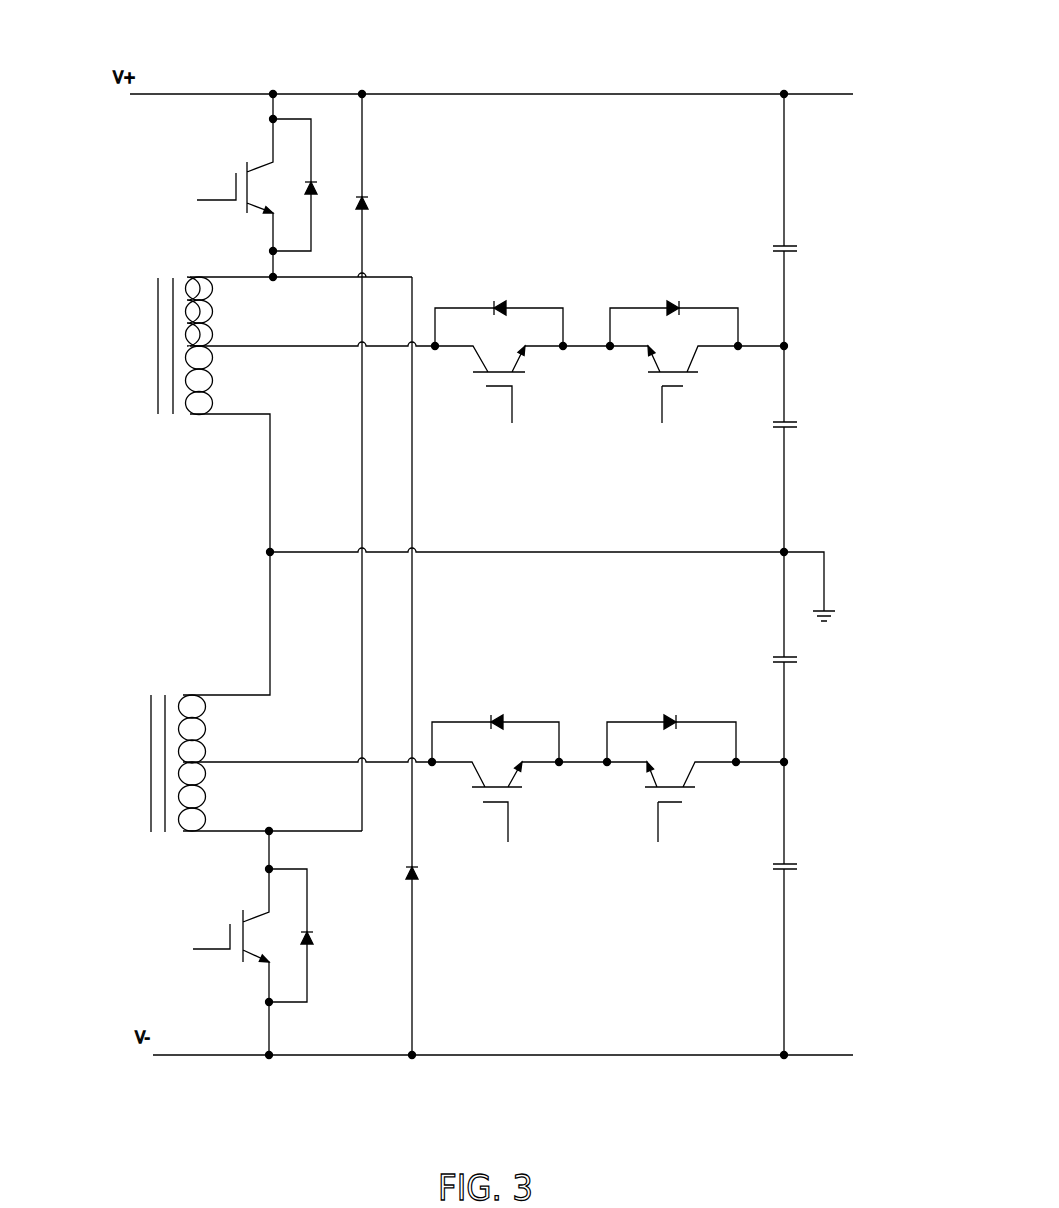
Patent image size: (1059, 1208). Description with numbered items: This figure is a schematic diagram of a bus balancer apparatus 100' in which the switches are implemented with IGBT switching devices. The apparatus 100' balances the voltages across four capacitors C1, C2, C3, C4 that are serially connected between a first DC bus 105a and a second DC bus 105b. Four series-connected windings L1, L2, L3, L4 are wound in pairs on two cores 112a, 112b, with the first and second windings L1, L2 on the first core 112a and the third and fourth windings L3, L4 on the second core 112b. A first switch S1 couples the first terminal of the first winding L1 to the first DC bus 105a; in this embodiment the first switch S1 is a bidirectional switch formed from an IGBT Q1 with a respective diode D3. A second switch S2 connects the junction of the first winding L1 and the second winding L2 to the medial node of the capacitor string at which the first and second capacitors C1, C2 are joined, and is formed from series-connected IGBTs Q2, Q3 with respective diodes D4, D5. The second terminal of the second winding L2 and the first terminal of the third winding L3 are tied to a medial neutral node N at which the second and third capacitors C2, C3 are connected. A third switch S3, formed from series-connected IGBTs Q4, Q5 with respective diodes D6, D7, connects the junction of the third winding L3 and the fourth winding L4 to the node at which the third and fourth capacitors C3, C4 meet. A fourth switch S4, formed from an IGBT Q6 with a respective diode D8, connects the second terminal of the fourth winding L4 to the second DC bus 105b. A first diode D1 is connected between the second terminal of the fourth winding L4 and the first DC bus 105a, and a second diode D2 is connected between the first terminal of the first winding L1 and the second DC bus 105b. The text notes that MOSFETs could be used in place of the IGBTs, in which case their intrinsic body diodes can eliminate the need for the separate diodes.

The bus balancer apparatus 100' is at (700, 35).
The first DC bus 105a is at (180, 94).
The second DC bus 105b is at (188, 1055).
The core 112a is at (158, 410).
The core 112b is at (150, 822).
The first switch S1 is at (167, 148).
The second switch S2 is at (577, 212).
The third switch S3 is at (583, 657).
The fourth switch S4 is at (162, 983).
The IGBT Q1 is at (225, 185).
The IGBT Q2 is at (521, 383).
The IGBT Q3 is at (696, 383).
The IGBT Q4 is at (518, 801).
The IGBT Q5 is at (692, 801).
The IGBT Q6 is at (222, 936).
The first diode D1 is at (377, 461).
The second diode D2 is at (426, 668).
The diode D3 is at (310, 185).
The diode D4 is at (499, 310).
The diode D5 is at (674, 310).
The diode D6 is at (495, 724).
The diode D7 is at (671, 724).
The diode D8 is at (306, 935).
The first capacitor C1 is at (798, 251).
The second capacitor C2 is at (803, 429).
The third capacitor C3 is at (773, 661).
The fourth capacitor C4 is at (801, 869).
The first winding L1 is at (212, 311).
The second winding L2 is at (311, 378).
The third winding L3 is at (205, 729).
The fourth winding L4 is at (306, 794).
The neutral node N is at (819, 586).